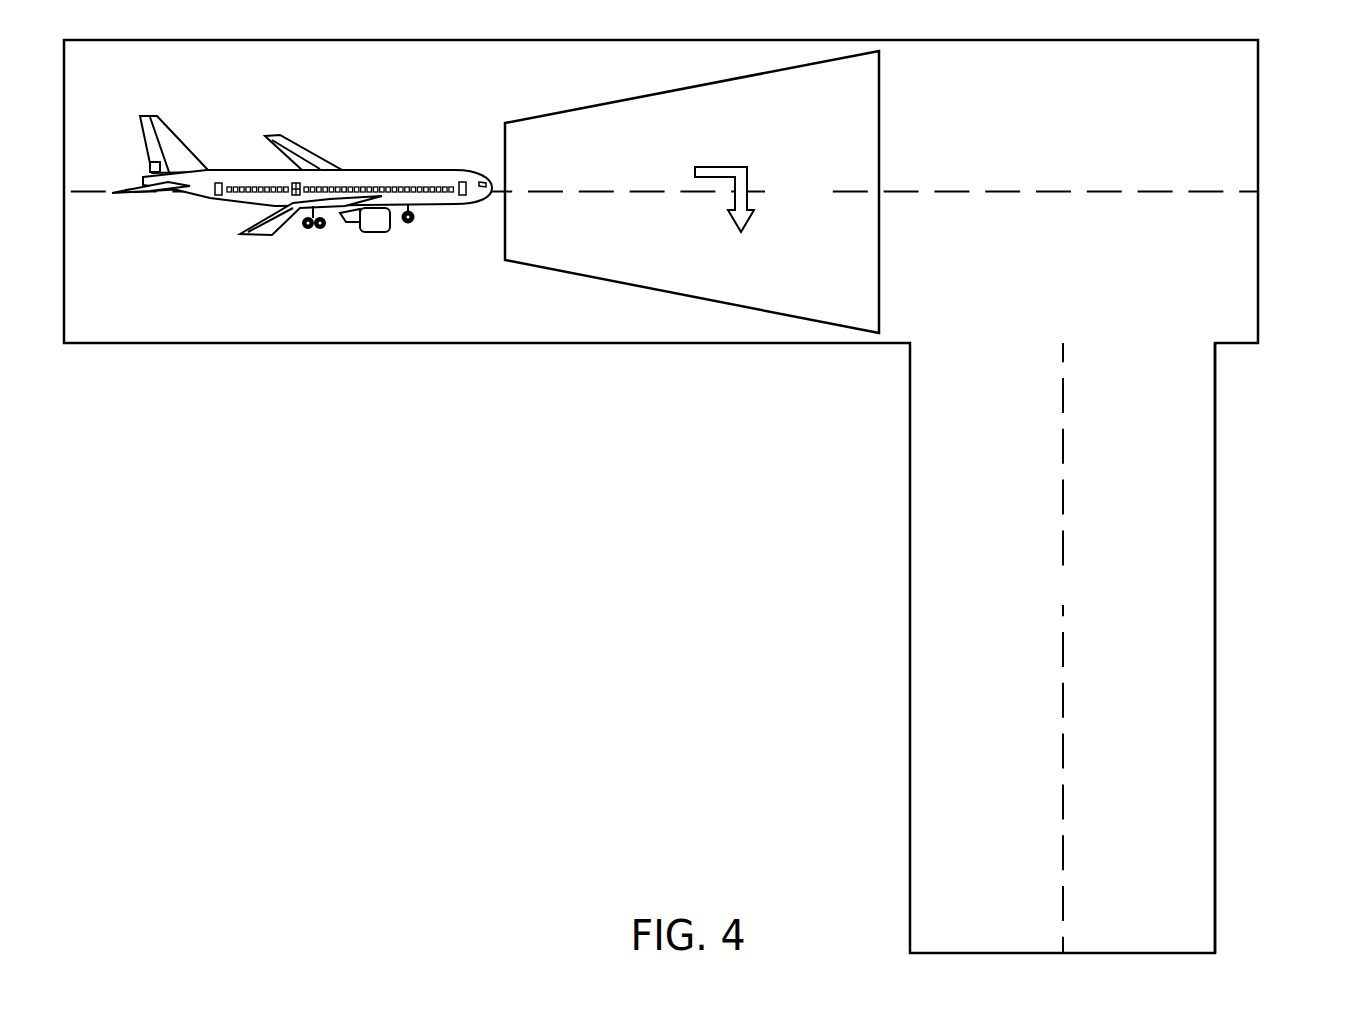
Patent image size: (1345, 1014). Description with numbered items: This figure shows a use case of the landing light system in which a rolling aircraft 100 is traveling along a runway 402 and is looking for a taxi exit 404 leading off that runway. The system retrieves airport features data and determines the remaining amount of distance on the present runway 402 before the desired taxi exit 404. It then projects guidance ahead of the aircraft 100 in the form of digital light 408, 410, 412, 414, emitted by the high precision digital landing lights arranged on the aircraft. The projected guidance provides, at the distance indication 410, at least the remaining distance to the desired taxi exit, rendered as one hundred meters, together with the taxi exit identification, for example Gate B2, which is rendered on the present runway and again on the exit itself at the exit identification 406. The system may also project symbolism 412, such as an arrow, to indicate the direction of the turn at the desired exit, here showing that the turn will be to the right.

The aircraft 100 is at (408, 167).
The runway 402 is at (1260, 95).
The taxi exit 404 is at (1216, 580).
The taxi exit identification 406 is at (1025, 592).
The projected digital light guidance 408 is at (879, 101).
The remaining distance indication 410 is at (812, 153).
The symbolism 412 is at (722, 165).
The projected digital light guidance element 414 is at (644, 190).